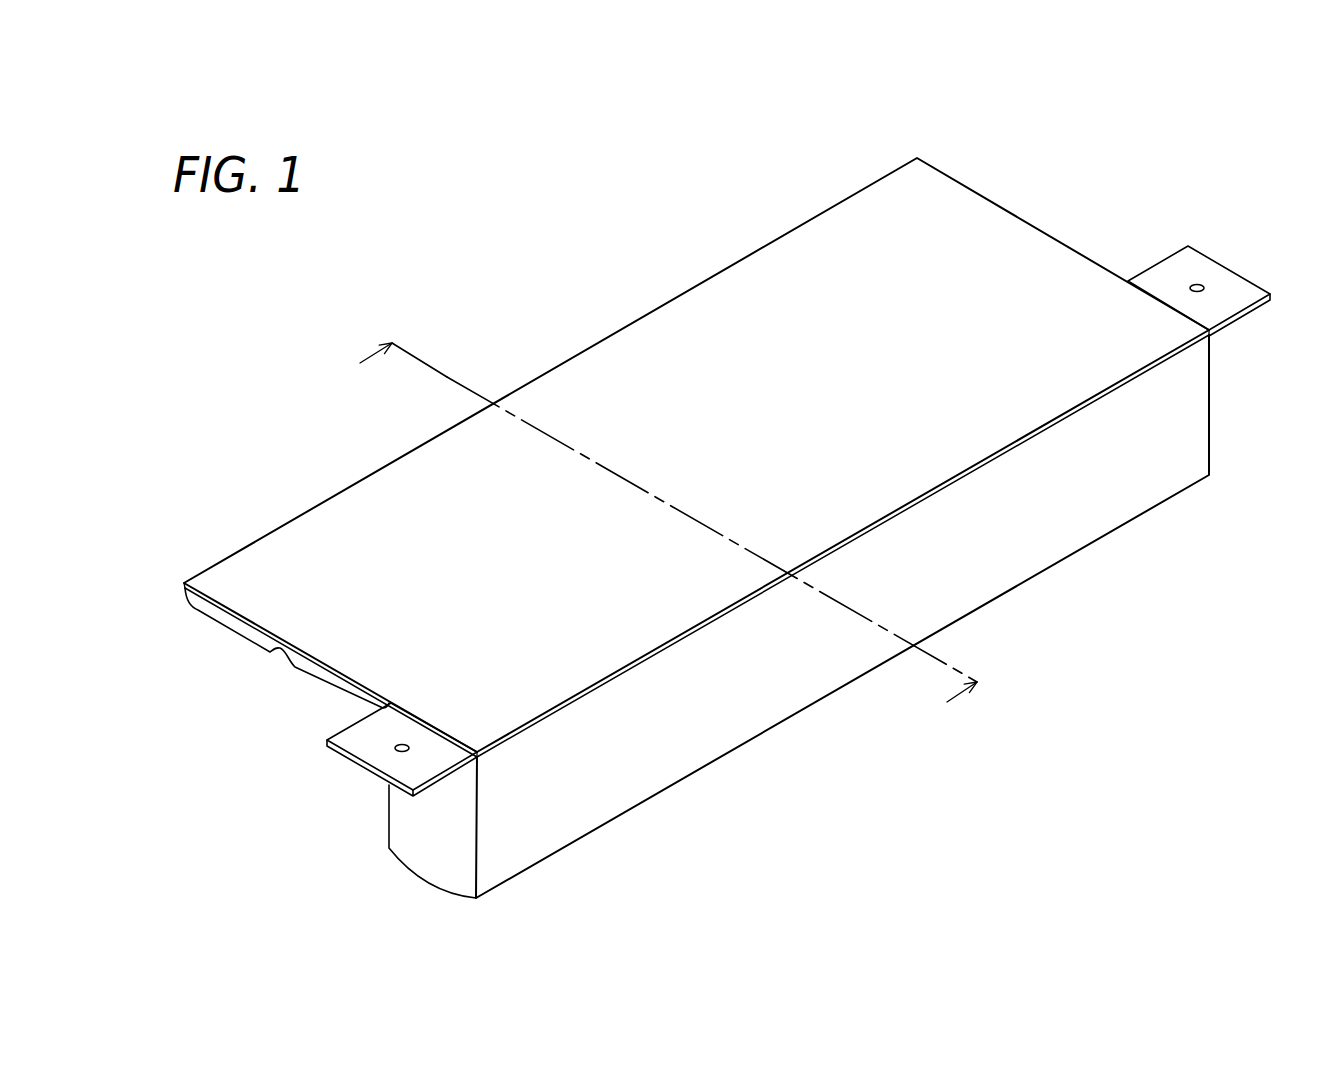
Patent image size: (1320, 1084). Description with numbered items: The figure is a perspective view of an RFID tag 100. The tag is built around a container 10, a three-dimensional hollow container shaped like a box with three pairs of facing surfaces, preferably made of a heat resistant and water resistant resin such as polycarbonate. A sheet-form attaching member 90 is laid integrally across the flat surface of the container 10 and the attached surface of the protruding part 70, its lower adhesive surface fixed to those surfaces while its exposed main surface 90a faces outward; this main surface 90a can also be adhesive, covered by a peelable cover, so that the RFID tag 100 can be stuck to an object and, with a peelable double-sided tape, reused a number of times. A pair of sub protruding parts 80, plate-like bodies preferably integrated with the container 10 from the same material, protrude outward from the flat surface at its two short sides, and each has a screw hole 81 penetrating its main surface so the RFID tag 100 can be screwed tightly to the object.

The RFID tag 100 is at (1267, 160).
The container 10 is at (1047, 552).
The protruding part 70 is at (198, 603).
The sub protruding part 80 is at (357, 745).
The screw hole 81 is at (405, 730).
The attaching member 90 is at (866, 200).
The main surface 90a is at (614, 372).